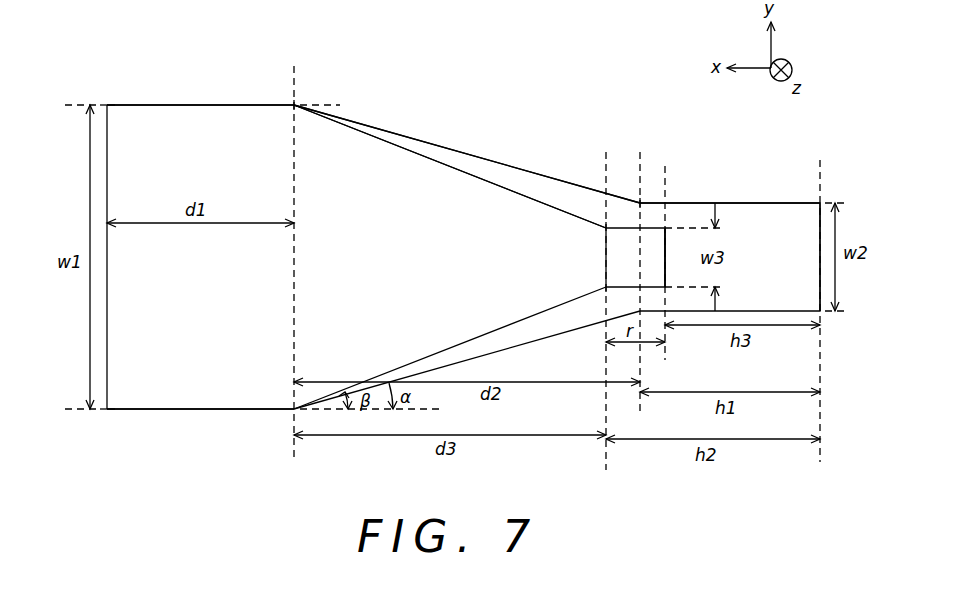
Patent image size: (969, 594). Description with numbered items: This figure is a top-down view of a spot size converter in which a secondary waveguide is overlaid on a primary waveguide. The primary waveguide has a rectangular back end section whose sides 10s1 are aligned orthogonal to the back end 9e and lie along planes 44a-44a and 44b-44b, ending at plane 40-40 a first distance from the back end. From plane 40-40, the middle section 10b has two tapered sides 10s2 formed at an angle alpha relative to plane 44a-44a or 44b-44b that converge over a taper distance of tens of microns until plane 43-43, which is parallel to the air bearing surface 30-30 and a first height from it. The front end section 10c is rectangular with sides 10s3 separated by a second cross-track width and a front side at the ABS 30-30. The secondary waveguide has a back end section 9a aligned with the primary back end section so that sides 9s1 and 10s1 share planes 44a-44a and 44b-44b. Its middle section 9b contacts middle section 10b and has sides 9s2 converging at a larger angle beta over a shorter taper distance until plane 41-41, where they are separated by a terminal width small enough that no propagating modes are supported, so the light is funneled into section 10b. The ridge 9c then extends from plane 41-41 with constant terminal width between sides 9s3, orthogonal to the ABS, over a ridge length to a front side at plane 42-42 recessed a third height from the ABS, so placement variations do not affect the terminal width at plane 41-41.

The back end section of secondary waveguide 9a is at (165, 397).
The middle section of secondary waveguide 9b is at (348, 160).
The ridge of secondary waveguide 9c is at (613, 258).
The back end of secondary waveguide 9e is at (107, 195).
The sides of secondary waveguide back end section 9s1 is at (154, 104).
The tapered sides of secondary waveguide middle section 9s2 is at (435, 160).
The sides of ridge 9s3 is at (627, 227).
The middle section of primary waveguide 10b is at (532, 188).
The front end section of primary waveguide 10c is at (775, 217).
The sides of primary waveguide back end section 10s1 is at (222, 104).
The tapered sides of primary waveguide middle section 10s2 is at (522, 154).
The sides of primary waveguide front end section 10s3 is at (742, 187).
The air bearing surface (ABS) 30 is at (817, 308).
The plane at front side of back end sections 40 is at (292, 262).
The plane at end of secondary waveguide taper 41 is at (604, 303).
The plane at front side of ridge 42 is at (667, 262).
The plane at end of primary waveguide taper 43 is at (641, 279).
The plane including lower sides of back end sections 44a is at (253, 409).
The plane including upper sides of back end sections 44b is at (201, 103).